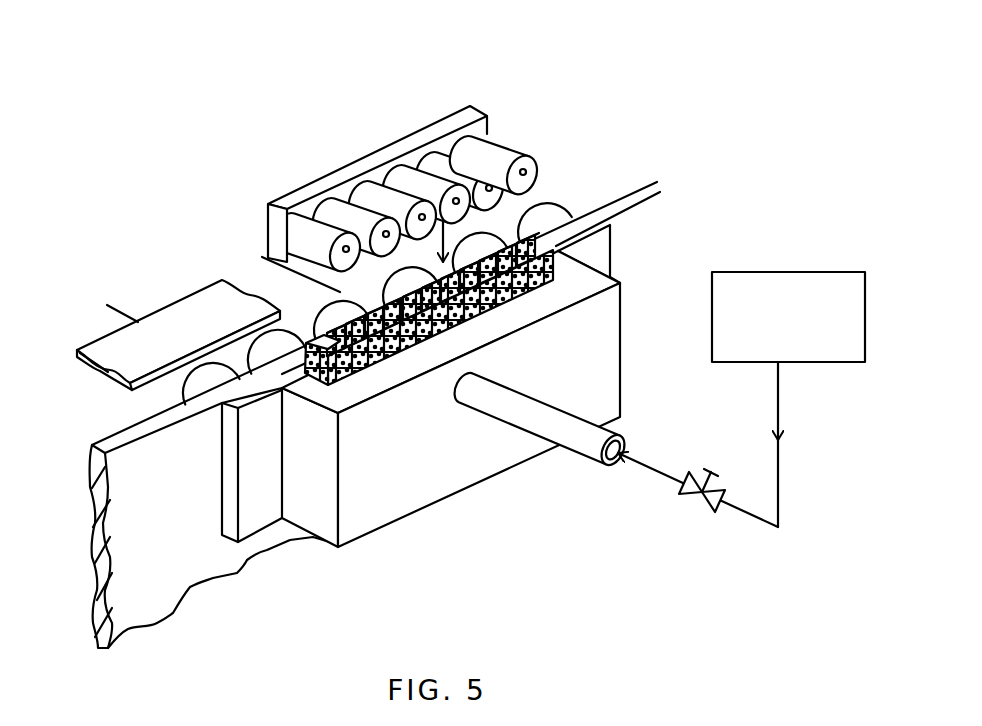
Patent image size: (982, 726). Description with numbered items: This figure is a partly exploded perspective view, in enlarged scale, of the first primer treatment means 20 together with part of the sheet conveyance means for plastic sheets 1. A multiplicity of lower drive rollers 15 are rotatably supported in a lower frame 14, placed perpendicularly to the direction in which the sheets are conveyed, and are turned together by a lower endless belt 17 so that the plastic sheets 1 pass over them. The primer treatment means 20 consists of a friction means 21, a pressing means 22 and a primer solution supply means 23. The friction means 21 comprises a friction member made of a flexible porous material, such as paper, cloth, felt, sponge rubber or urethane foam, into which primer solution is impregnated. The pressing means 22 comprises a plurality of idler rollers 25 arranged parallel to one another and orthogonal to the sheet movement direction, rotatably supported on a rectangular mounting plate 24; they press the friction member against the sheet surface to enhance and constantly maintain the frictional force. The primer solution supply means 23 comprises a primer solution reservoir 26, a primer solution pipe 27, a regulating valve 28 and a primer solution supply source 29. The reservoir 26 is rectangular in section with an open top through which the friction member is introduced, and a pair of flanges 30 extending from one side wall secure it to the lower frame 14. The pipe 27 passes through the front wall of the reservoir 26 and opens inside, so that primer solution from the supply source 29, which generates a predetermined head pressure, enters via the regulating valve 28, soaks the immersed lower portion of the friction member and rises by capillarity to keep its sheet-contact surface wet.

The plastic sheet 1 is at (227, 258).
The lower frame 14 is at (168, 580).
The lower drive rollers 15 is at (200, 288).
The lower endless belt 17 is at (105, 360).
The first primer treatment means 20 is at (345, 84).
The friction means 21 is at (342, 374).
The pressing means 22 is at (472, 93).
The primer solution supply means 23 is at (630, 271).
The mounting plate 24 is at (474, 114).
The idler rollers 25 is at (527, 168).
The primer solution reservoir 26 is at (425, 487).
The primer solution pipe 27 is at (580, 443).
The regulating valve 28 is at (700, 503).
The primer solution supply source 29 is at (788, 399).
The flanges 30 is at (230, 458).